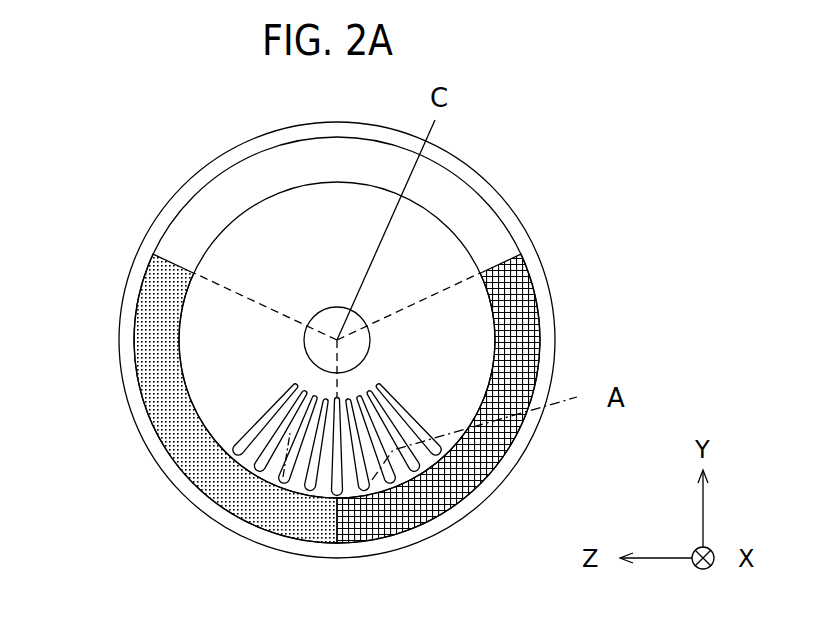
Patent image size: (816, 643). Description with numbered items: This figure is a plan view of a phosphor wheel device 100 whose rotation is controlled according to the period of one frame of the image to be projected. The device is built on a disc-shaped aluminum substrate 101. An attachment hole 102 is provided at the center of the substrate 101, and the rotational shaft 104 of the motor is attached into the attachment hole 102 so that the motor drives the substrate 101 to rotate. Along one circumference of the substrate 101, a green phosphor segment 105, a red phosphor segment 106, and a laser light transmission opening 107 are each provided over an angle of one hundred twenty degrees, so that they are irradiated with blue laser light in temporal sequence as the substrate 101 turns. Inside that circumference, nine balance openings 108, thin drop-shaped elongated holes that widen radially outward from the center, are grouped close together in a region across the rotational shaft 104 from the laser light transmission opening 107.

The phosphor wheel device 100 is at (510, 153).
The substrate 101 is at (193, 173).
The attachment hole 102 is at (322, 308).
The rotational shaft 104 is at (320, 349).
The green phosphor segment 105 is at (432, 520).
The red phosphor segment 106 is at (173, 428).
The laser light transmission opening 107 is at (343, 157).
The balance openings 108 is at (292, 447).